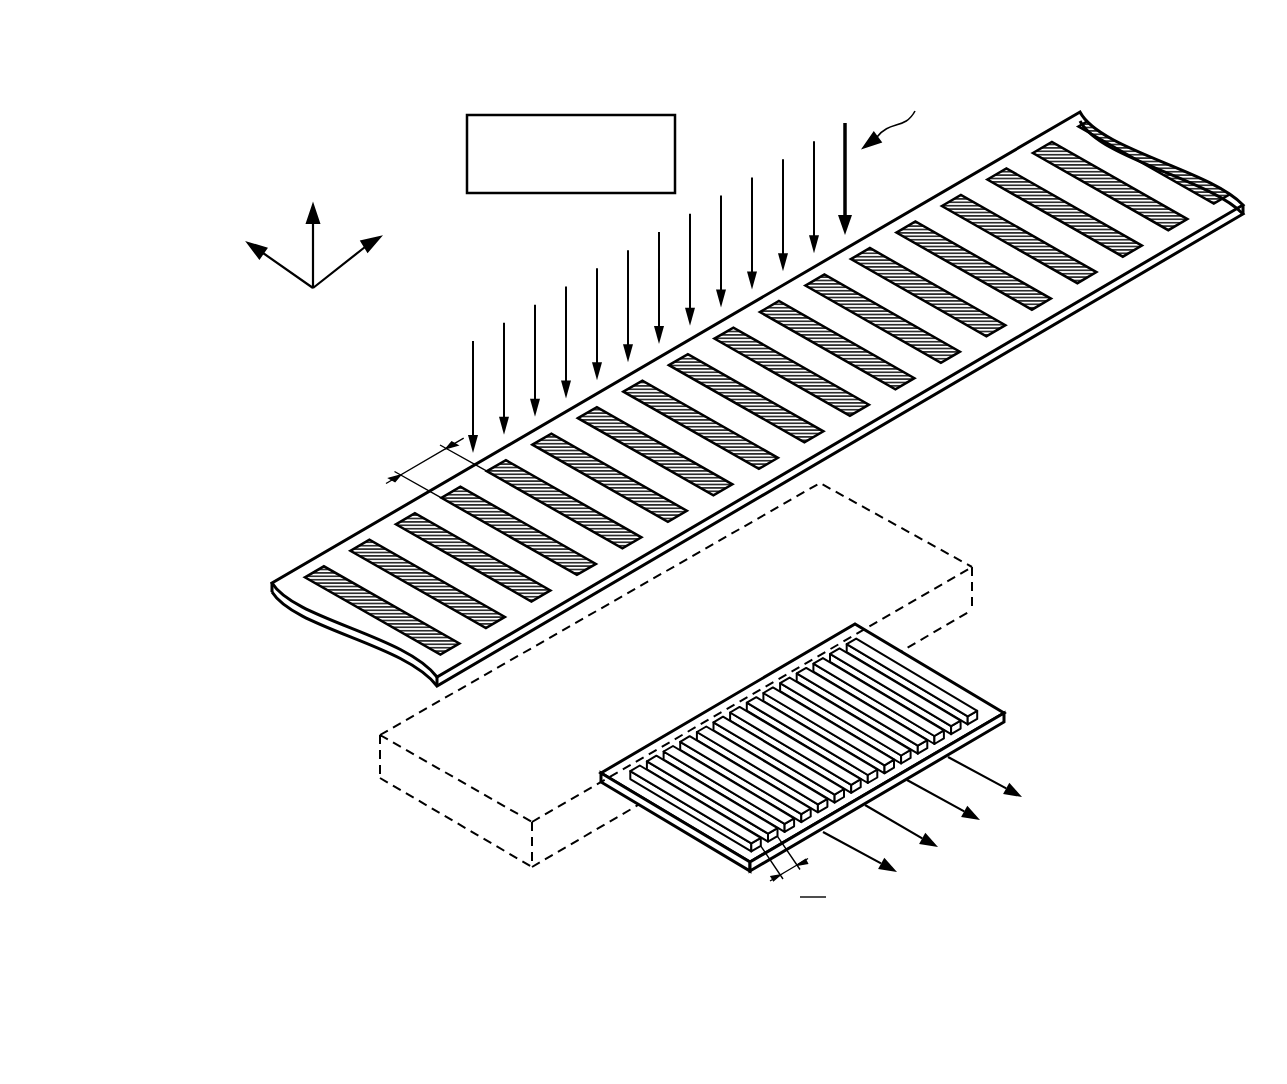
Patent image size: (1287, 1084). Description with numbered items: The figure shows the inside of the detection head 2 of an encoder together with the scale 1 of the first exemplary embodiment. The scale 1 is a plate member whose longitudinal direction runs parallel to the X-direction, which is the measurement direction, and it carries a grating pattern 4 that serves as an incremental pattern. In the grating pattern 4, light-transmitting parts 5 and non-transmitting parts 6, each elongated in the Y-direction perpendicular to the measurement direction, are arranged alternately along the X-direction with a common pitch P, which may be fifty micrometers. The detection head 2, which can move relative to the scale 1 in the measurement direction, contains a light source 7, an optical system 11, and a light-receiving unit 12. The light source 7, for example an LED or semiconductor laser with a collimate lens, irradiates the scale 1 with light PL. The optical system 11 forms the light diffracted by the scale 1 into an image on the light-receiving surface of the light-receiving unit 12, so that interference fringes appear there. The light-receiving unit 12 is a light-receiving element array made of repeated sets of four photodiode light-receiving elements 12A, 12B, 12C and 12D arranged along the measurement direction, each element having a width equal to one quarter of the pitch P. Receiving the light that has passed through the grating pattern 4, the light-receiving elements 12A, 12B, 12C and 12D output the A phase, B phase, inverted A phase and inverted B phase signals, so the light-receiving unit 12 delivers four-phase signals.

The scale 1 is at (324, 497).
The detection head 2 is at (1205, 589).
The grating pattern 4 is at (1175, 136).
The light-transmitting parts 5 is at (1132, 248).
The non-transmitting parts 6 is at (1142, 230).
The light source 7 is at (675, 141).
The optical system 11 is at (931, 506).
The light-receiving unit 12 is at (977, 652).
The light-receiving elements 12A is at (660, 753).
The light-receiving elements 12B is at (642, 760).
The light-receiving elements 12C is at (640, 756).
The light-receiving elements 12D is at (620, 772).